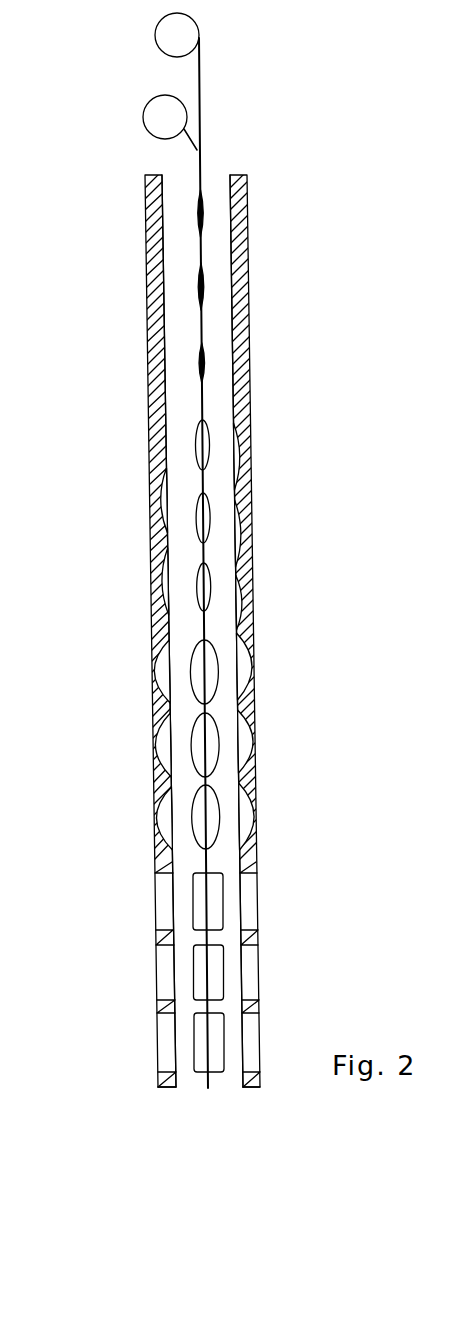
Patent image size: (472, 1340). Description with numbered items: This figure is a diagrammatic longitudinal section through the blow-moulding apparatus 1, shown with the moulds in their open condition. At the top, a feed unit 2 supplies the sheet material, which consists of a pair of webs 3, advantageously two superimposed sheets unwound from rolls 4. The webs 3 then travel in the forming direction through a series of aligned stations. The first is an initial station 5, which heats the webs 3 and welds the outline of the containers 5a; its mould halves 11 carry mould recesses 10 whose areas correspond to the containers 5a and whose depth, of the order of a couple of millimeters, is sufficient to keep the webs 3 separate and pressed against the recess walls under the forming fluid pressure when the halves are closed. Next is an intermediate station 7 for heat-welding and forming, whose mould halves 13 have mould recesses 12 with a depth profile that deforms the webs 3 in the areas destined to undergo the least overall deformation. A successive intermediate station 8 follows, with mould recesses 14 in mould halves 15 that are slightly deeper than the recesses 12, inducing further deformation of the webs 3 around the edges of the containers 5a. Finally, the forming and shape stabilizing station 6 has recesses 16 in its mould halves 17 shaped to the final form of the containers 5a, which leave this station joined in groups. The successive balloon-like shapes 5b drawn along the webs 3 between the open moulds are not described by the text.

The moulding apparatus 1 is at (322, 107).
The feed unit 2 is at (238, 33).
The webs 3 is at (199, 88).
The rolls 4 is at (172, 38).
The initial station 5 is at (284, 214).
The containers 5a is at (190, 673).
The compacted yarn portion 5b is at (197, 362).
The forming and shape stabilizing station 6 is at (296, 925).
The intermediate station 7 is at (271, 427).
The successive intermediate station 8 is at (300, 838).
The mould recesses 10 is at (148, 284).
The mould halves 11 is at (150, 330).
The mould recesses 12 is at (148, 535).
The mould halves 13 is at (160, 621).
The mould recesses 14 is at (151, 761).
The mould halves 15 is at (158, 858).
The recesses 16 is at (156, 975).
The mould halves 17 is at (166, 1088).